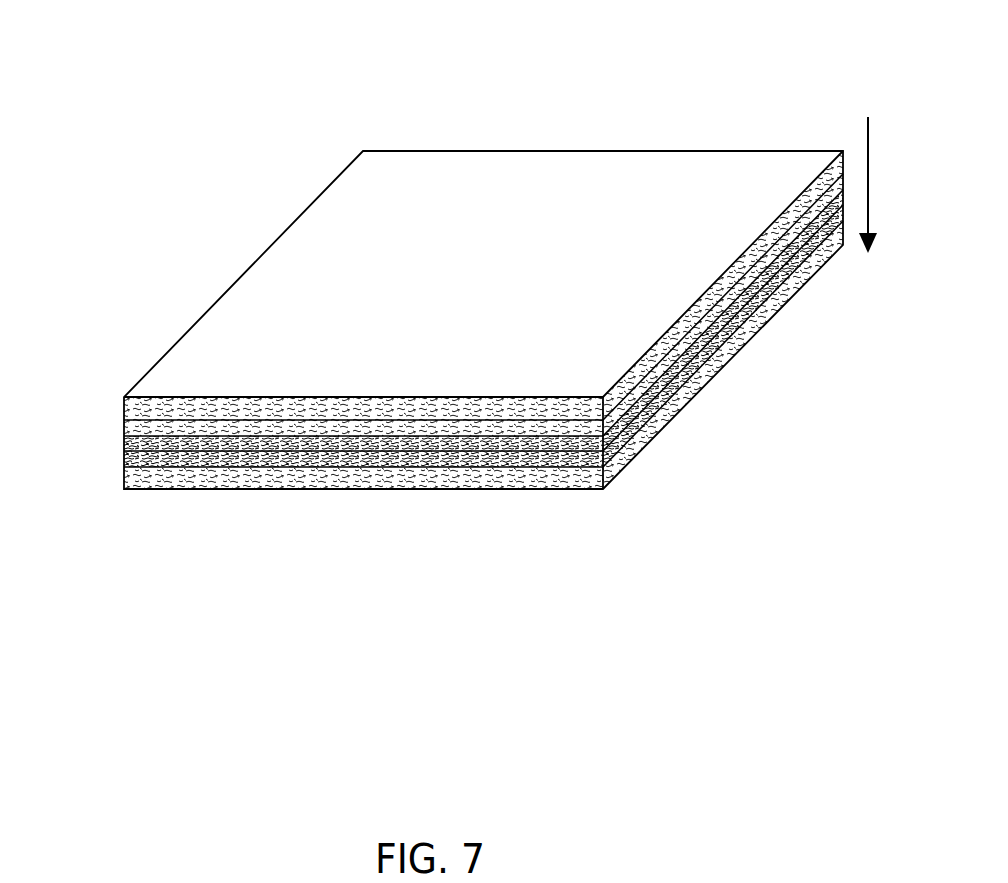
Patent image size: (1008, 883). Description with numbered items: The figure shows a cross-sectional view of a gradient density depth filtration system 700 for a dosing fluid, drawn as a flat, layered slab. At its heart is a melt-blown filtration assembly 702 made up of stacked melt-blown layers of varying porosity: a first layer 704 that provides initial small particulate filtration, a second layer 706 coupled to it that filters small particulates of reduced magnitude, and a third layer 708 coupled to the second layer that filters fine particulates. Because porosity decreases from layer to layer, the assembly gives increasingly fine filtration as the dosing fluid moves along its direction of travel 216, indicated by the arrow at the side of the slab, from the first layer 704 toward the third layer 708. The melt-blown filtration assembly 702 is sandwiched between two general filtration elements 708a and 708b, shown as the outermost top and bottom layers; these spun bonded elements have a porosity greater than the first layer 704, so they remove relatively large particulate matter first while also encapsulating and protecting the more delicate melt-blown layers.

The gradient density depth filtration system 700 is at (260, 73).
The direction of travel 216 is at (868, 132).
The melt-blown filtration assembly 702 is at (450, 321).
The first layer 704 is at (392, 460).
The second layer 706 is at (347, 445).
The third layer 708 is at (304, 427).
The general filtration element 708a is at (130, 405).
The general filtration element 708b is at (130, 478).